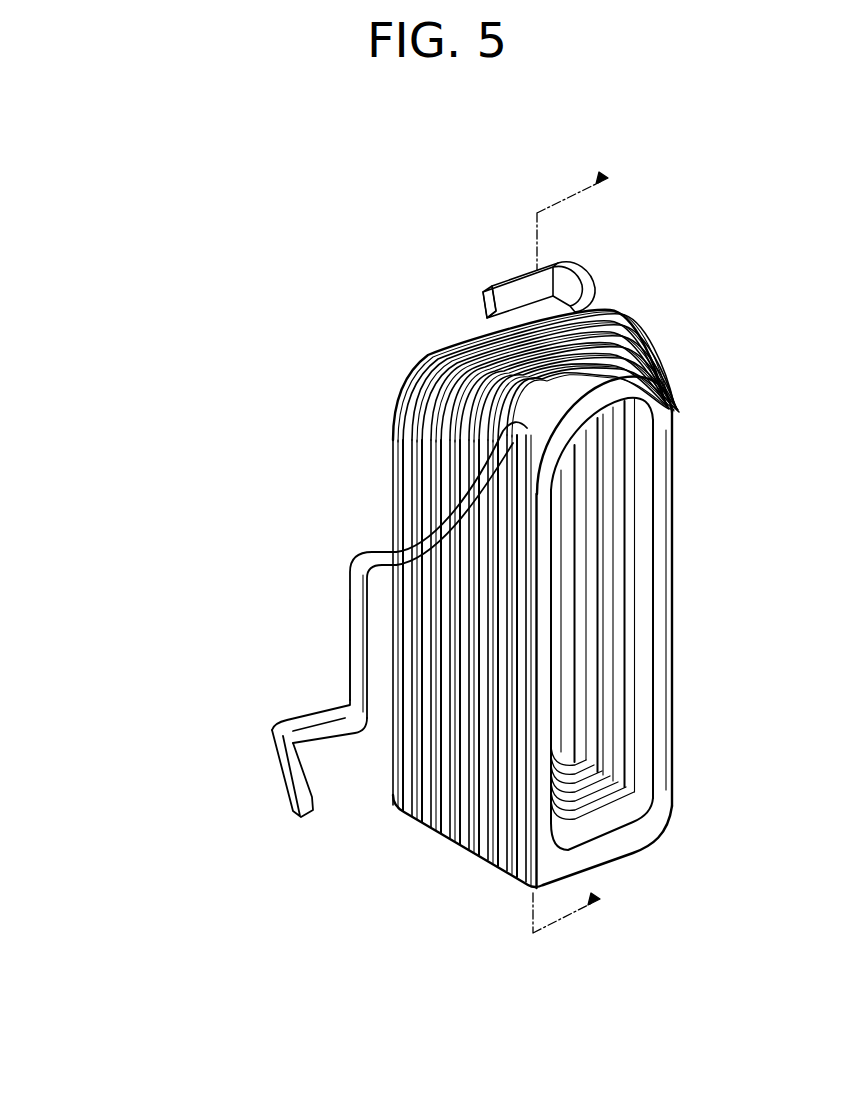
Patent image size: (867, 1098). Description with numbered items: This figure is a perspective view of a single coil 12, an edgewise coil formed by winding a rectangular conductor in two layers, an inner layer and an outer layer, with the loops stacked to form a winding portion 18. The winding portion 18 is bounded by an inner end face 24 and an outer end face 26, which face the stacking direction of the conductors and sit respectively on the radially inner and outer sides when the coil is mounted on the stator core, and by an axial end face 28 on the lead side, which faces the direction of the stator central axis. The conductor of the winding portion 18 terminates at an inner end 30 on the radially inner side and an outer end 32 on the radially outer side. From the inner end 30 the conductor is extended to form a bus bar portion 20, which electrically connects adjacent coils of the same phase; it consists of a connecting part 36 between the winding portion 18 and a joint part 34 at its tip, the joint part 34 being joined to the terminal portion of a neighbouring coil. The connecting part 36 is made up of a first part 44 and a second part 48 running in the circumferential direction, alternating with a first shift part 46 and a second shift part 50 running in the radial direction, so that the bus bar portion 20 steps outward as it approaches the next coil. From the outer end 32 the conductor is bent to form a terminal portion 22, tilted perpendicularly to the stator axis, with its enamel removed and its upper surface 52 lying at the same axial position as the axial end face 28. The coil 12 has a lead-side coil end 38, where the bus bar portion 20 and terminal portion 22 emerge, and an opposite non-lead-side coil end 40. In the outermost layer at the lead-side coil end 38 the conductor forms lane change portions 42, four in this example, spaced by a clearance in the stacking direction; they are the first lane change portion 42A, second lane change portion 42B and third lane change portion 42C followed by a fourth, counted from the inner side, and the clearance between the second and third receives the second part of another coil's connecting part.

The coil 12 is at (280, 383).
The winding portion 18 is at (691, 641).
The bus bar portion 20 is at (77, 600).
The terminal portion 22 is at (491, 291).
The inner end face 24 is at (660, 693).
The outer end face 26 is at (392, 761).
The axial end face 28 is at (475, 338).
The inner end 30 is at (520, 497).
The outer end 32 is at (571, 290).
The joint part 34 is at (294, 764).
The connecting part 36 is at (127, 513).
The lead-side coil end 38 is at (639, 312).
The non-lead-side coil end 40 is at (691, 788).
The lane change portion 42 is at (590, 297).
The first lane change portion 42A is at (612, 386).
The second lane change portion 42B is at (606, 358).
The third lane change portion 42C is at (608, 338).
The first part 44 is at (397, 482).
The first shift part 46 is at (362, 556).
The second part 48 is at (357, 633).
The second shift part 50 is at (333, 717).
The upper surface 52 is at (512, 283).